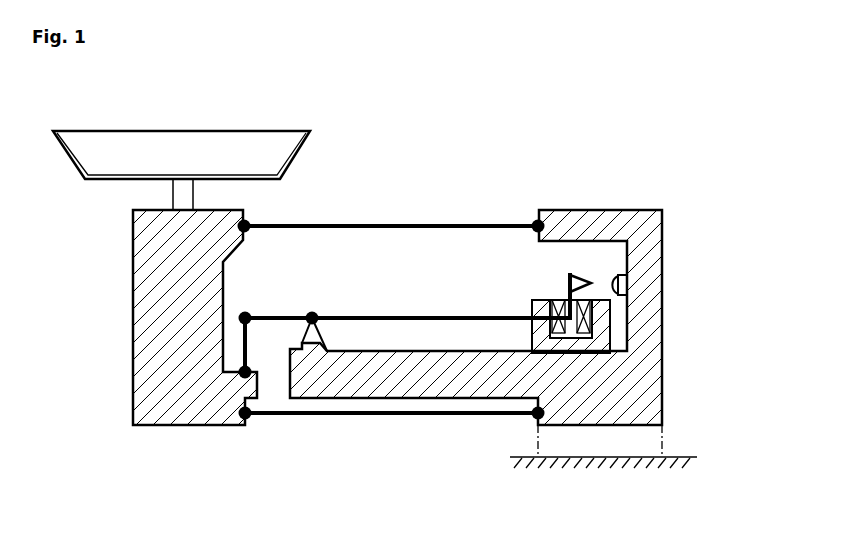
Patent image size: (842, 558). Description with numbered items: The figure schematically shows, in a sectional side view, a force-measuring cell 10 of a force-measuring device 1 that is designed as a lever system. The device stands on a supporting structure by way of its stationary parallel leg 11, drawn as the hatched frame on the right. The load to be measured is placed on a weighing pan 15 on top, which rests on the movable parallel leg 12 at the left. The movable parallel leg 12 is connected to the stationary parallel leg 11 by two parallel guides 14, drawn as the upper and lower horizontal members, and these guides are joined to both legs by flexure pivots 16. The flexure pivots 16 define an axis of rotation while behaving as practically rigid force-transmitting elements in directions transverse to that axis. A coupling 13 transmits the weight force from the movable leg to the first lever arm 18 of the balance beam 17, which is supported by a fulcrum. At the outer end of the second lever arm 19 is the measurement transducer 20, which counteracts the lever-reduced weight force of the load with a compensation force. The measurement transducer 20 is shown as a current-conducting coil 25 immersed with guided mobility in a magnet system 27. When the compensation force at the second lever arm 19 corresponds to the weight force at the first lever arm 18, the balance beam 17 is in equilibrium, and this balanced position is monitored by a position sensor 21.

The force-measuring device 1 is at (712, 88).
The force-measuring cell 10 is at (686, 411).
The stationary parallel leg 11 is at (421, 279).
The movable parallel leg 12 is at (421, 279).
The coupling 13 is at (245, 340).
The parallel guides 14 is at (350, 224).
The weighing pan 15 is at (185, 150).
The flexure pivots 16 is at (244, 222).
The balance beam 17 is at (406, 340).
The first lever arm 18 is at (312, 320).
The second lever arm 19 is at (467, 316).
The measurement transducer 20 is at (624, 344).
The position sensor 21 is at (598, 257).
The current-conducting coil 25 is at (592, 307).
The magnet system 27 is at (608, 318).